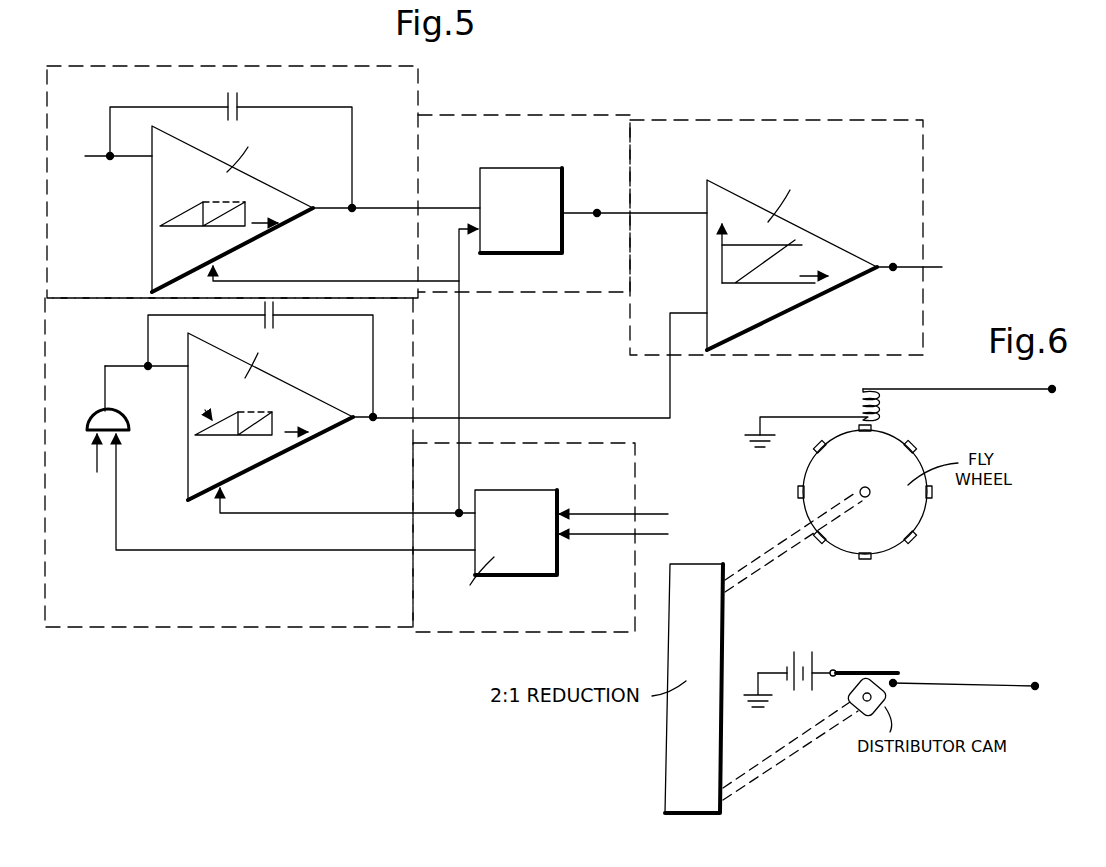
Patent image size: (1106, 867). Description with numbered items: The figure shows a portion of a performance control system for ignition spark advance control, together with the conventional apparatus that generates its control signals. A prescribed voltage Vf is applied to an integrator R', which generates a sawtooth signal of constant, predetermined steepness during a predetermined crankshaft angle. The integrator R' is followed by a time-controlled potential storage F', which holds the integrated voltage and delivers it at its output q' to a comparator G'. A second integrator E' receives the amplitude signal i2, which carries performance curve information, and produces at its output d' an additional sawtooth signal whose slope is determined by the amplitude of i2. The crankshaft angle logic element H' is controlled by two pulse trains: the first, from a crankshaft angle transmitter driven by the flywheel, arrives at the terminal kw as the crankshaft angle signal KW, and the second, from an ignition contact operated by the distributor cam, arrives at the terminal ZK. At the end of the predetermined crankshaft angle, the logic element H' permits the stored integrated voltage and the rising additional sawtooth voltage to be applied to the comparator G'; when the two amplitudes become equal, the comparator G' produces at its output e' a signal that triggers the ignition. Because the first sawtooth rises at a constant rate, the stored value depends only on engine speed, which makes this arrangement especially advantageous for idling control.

In FIG. 5, the integrator R' is at (263, 182).
In FIG. 5, the potential storage F' is at (562, 314).
In FIG. 5, the comparator G' is at (657, 269).
In FIG. 5, the integrator E' is at (260, 462).
In FIG. 5, the logic element H' is at (555, 537).
In FIG. 5, the prescribed voltage Vf is at (106, 145).
In FIG. 5, the potential storage output q' is at (634, 226).
In FIG. 5, the comparator output e' is at (909, 281).
In FIG. 5, the amplitude signal i2 is at (145, 373).
In FIG. 5, the integrator output d' is at (362, 431).
In FIG. 5, the terminal kw is at (628, 514).
In FIG. 6, the crankshaft angle signal KW is at (918, 414).
In FIG. 6, the terminal ZK is at (980, 685).